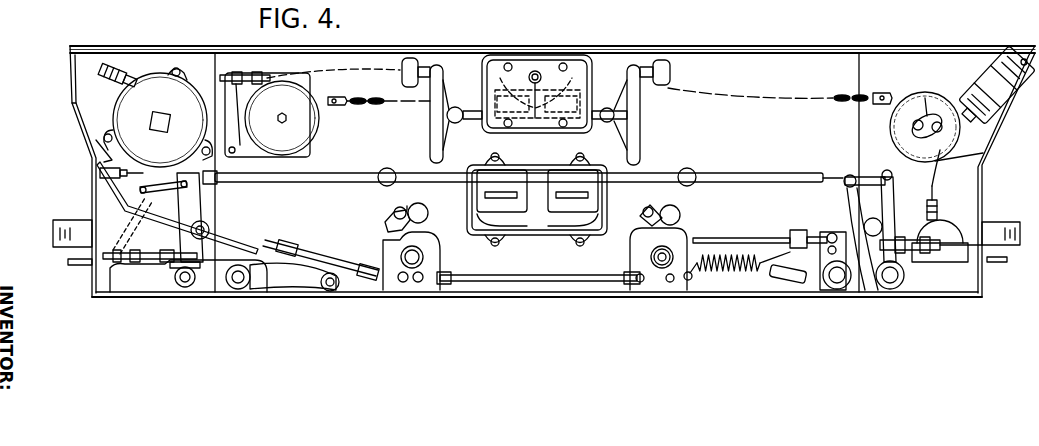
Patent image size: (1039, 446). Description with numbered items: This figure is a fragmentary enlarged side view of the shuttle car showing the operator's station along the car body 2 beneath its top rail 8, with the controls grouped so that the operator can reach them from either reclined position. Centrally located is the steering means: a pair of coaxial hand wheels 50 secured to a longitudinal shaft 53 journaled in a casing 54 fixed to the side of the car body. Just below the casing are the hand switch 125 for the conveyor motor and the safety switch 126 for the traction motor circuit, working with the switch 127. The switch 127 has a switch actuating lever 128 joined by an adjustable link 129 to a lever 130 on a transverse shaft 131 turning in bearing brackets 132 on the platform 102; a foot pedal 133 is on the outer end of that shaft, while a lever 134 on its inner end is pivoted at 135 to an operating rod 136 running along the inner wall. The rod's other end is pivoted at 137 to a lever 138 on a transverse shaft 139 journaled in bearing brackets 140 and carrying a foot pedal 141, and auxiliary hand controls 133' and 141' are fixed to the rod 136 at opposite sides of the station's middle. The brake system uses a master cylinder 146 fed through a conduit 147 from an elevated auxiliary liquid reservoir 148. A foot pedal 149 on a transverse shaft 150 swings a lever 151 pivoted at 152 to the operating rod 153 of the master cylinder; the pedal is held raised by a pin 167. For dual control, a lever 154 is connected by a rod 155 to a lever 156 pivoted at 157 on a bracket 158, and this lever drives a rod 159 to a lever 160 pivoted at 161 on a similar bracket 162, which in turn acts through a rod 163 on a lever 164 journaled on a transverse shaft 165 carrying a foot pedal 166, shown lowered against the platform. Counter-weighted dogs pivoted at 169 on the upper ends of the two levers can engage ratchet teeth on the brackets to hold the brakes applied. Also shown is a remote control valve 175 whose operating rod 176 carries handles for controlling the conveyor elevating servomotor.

The car body 2 is at (72, 118).
The top rail 8 is at (770, 72).
The hand wheels 50 is at (538, 97).
The shaft 53 is at (465, 92).
The casing 54 is at (545, 91).
The bottom plate or platform 102 is at (362, 293).
The hand switch 125 is at (481, 195).
The safety switch 126 is at (593, 200).
The switch 127 is at (115, 100).
The switch actuating lever 128 is at (143, 175).
The adjustable link 129 is at (170, 176).
The lever 130 is at (207, 213).
The transverse shaft 131 is at (185, 288).
The bearing brackets 132 is at (178, 284).
The foot pedal 133 is at (229, 222).
The auxiliary hand control 133' is at (376, 156).
The lever 134 is at (187, 212).
The pivotal connection 135 is at (202, 177).
The operating rod 136 is at (343, 167).
The pivotal connection 137 is at (893, 172).
The lever 138 is at (890, 194).
The transverse shaft 139 is at (893, 286).
The bearing brackets 140 is at (883, 287).
The foot pedal 141 is at (923, 226).
The auxiliary hand control 141' is at (705, 159).
The master cylinder 146 is at (934, 203).
The conduit 147 is at (983, 157).
The auxiliary liquid reservoir 148 is at (1003, 62).
The foot pedal 149 is at (852, 208).
The transverse shaft 150 is at (840, 290).
The lever 151 is at (833, 262).
The pivotal connection 152 is at (806, 283).
The operating rod 153 is at (833, 245).
The lever 154 is at (826, 238).
The rod 155 is at (741, 238).
The lever 156 is at (690, 260).
The pivot 157 is at (658, 267).
The bracket 158 is at (639, 275).
The rod 159 is at (537, 282).
The lever 160 is at (425, 238).
The pivot 161 is at (401, 257).
The bracket 162 is at (396, 278).
The rod 163 is at (327, 254).
The lever 164 is at (242, 253).
The transverse shaft 165 is at (238, 290).
The foot pedal 166 is at (329, 291).
The pin 167 is at (860, 220).
The pivot 169 is at (680, 210).
The remote control valve 175 is at (555, 131).
The operating rod 176 is at (520, 131).